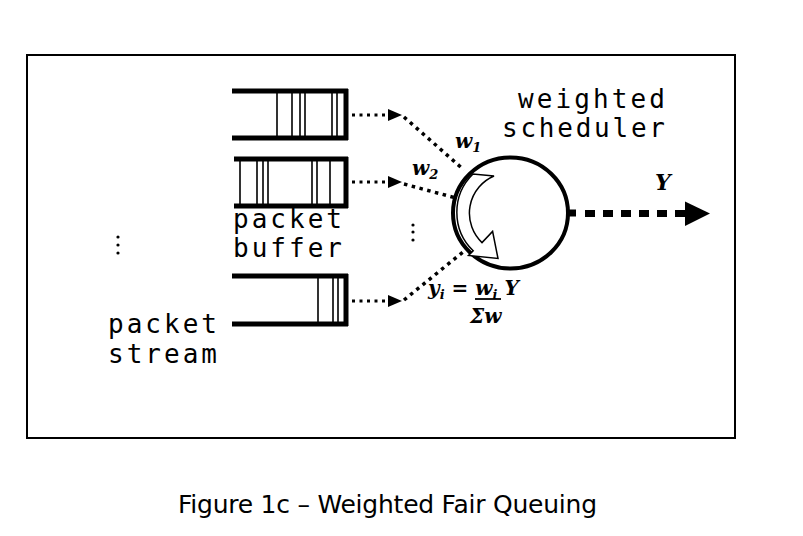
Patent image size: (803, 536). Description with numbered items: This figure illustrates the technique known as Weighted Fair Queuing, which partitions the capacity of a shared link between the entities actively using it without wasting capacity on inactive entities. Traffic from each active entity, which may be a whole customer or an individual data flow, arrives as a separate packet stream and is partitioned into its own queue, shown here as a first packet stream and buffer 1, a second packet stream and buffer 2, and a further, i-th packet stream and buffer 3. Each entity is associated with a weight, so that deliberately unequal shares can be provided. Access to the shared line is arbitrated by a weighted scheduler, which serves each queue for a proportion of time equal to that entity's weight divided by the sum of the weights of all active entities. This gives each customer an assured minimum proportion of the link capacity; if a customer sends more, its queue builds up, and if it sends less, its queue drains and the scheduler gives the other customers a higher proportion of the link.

The first packet stream x1(t) and its packet buffer 1 is at (222, 117).
The second packet stream x2(t) and its packet buffer 2 is at (222, 183).
The i-th packet stream xi(t) and its packet buffer 3 is at (220, 302).